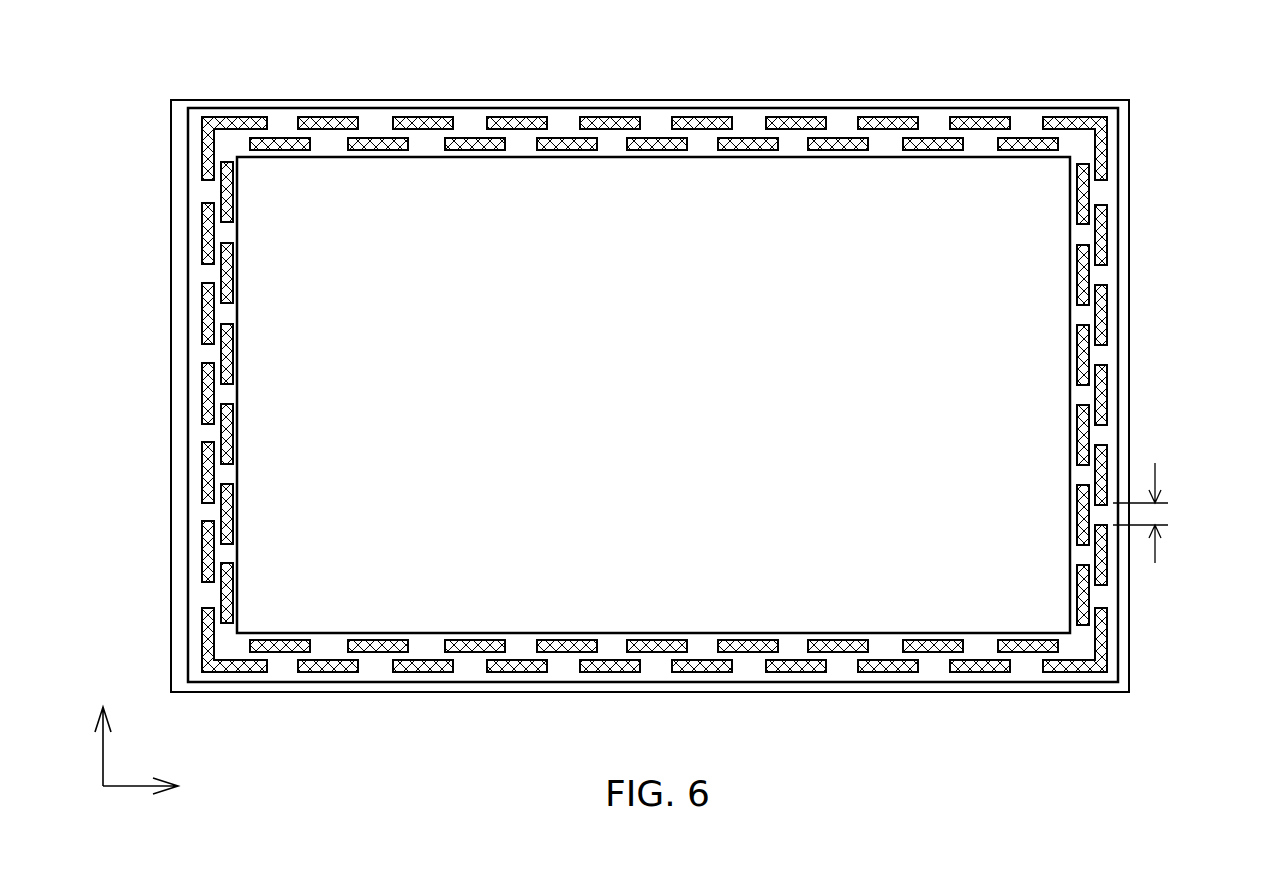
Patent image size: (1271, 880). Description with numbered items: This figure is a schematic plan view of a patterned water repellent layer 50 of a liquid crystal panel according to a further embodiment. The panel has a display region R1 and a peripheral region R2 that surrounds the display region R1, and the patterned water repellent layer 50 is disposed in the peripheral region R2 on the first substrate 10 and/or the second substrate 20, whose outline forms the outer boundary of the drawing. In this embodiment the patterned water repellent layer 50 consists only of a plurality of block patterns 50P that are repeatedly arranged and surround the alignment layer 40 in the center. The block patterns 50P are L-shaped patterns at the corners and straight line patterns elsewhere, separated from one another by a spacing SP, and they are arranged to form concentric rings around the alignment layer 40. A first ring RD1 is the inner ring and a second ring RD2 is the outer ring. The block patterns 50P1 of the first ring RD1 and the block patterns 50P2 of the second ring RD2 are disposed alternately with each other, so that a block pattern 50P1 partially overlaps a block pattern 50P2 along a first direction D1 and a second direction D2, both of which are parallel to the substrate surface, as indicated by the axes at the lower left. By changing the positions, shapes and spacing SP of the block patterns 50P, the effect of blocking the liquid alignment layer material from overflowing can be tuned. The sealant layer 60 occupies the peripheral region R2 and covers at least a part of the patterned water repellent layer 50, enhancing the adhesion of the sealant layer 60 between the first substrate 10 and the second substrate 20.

The first substrate 10 is at (706, 396).
The second substrate 20 is at (1132, 395).
The alignment layer 40 is at (892, 590).
The patterned water repellent layer 50 is at (652, 352).
The block pattern 50P is at (1106, 172).
The block pattern in the first ring 50P1 is at (656, 137).
The block pattern in the second ring 50P2 is at (703, 116).
The first ring RD1 is at (573, 342).
The second ring RD2 is at (582, 365).
The sealant layer 60 is at (1115, 325).
The display region R1 is at (653, 472).
The peripheral region R2 is at (696, 450).
The spacing SP is at (1155, 513).
The first direction D1 is at (159, 787).
The second direction D2 is at (102, 733).